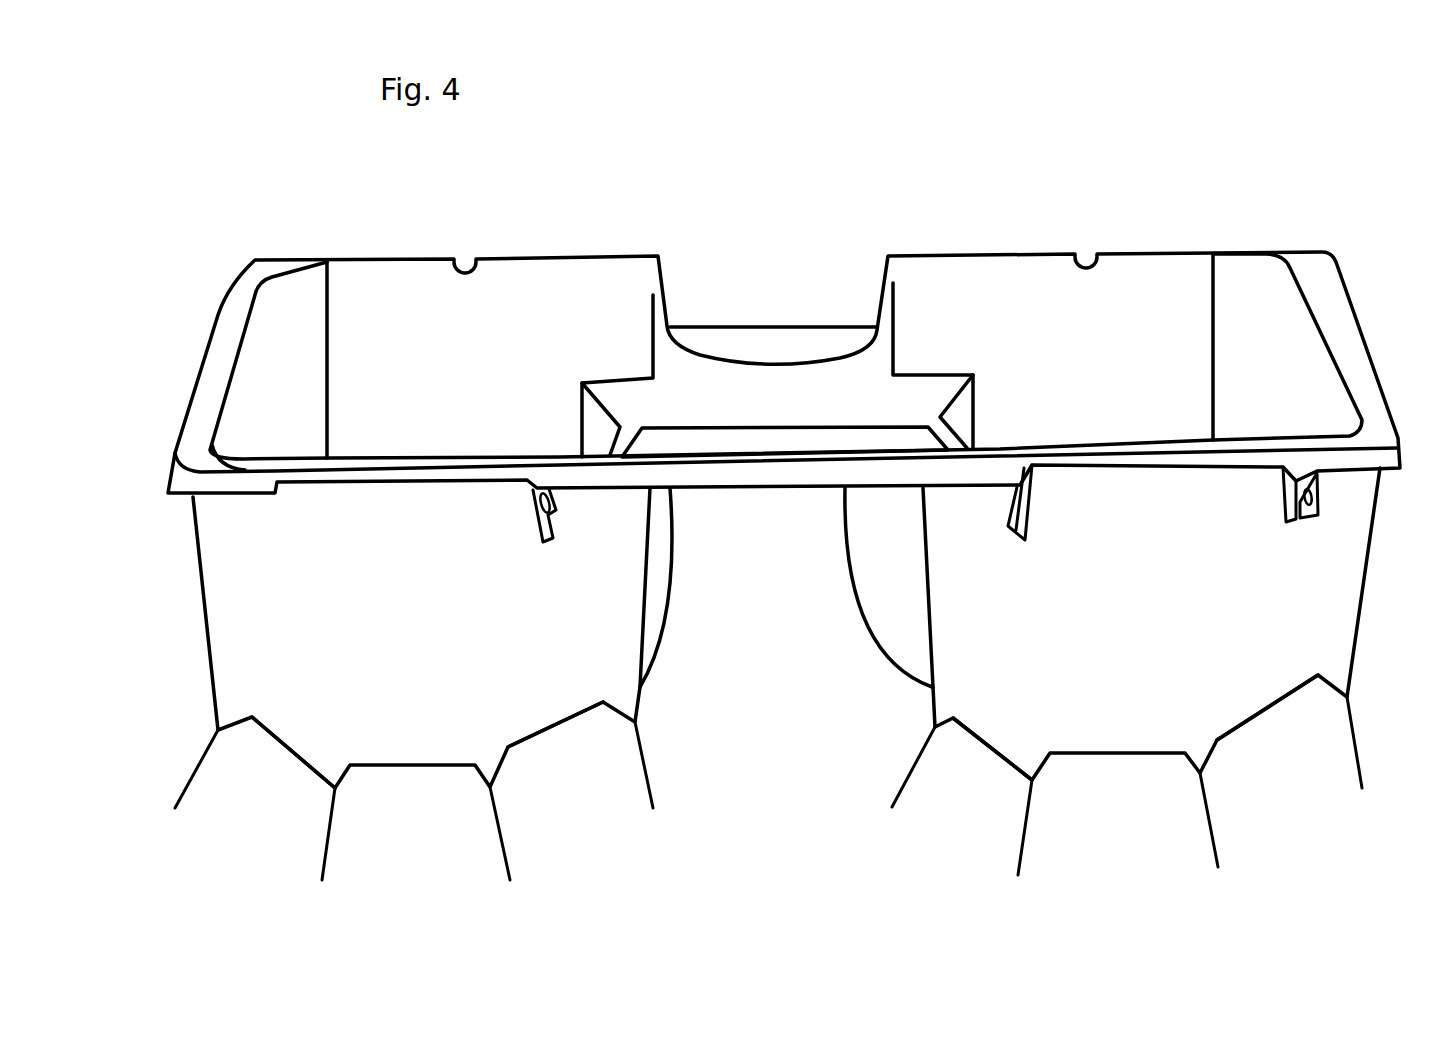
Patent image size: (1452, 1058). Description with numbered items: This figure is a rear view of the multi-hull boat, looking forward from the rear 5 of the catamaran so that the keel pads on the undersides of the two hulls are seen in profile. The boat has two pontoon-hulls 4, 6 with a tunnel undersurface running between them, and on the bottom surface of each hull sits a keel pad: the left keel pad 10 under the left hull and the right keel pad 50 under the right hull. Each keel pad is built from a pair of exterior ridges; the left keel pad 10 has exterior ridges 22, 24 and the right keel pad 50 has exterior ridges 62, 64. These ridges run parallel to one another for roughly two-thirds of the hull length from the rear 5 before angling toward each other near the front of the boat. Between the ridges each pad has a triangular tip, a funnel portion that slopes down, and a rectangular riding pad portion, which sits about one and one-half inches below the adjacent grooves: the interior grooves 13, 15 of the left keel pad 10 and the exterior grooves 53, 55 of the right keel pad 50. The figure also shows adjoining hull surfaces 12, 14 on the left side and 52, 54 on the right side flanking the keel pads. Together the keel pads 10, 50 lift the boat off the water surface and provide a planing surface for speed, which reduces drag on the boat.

The pontoon-hull 4 is at (1143, 517).
The rear 5 is at (753, 475).
The pontoon-hull 6 is at (400, 553).
The left keel pad 10 is at (398, 744).
The first basin side wall 12 is at (179, 792).
The interior groove 13 is at (307, 767).
The first basin inner side wall 14 is at (655, 788).
The interior groove 15 is at (562, 725).
The exterior ridge 22 is at (317, 858).
The exterior ridge 24 is at (511, 857).
The right keel pad 50 is at (1110, 725).
The second basin side wall 52 is at (895, 789).
The exterior groove 53 is at (995, 745).
The second basin outer side wall 54 is at (1366, 766).
The exterior groove 55 is at (1273, 705).
The exterior ridge 62 is at (1013, 852).
The exterior ridge 64 is at (1220, 843).